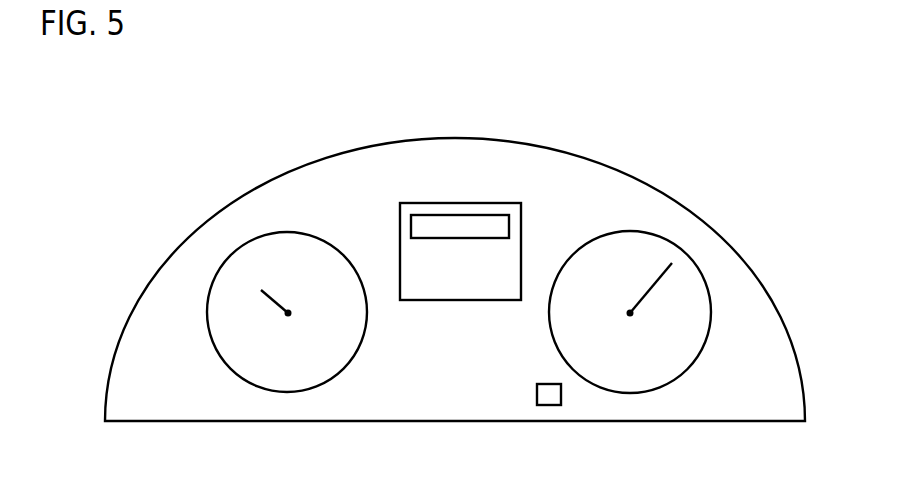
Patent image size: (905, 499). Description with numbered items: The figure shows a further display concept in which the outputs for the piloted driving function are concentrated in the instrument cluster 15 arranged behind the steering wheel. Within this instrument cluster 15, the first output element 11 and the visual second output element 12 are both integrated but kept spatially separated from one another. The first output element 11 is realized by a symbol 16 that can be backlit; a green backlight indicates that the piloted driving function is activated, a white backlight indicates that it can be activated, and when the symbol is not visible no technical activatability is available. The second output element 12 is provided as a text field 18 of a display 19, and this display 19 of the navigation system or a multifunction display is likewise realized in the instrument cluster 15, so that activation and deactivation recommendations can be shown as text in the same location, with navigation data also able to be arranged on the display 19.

The first output element 11 is at (558, 421).
The second output element 12 is at (400, 221).
The instrument cluster 15 is at (582, 158).
The symbol 16 is at (537, 395).
The text field 18 is at (462, 213).
The display 19 is at (422, 202).